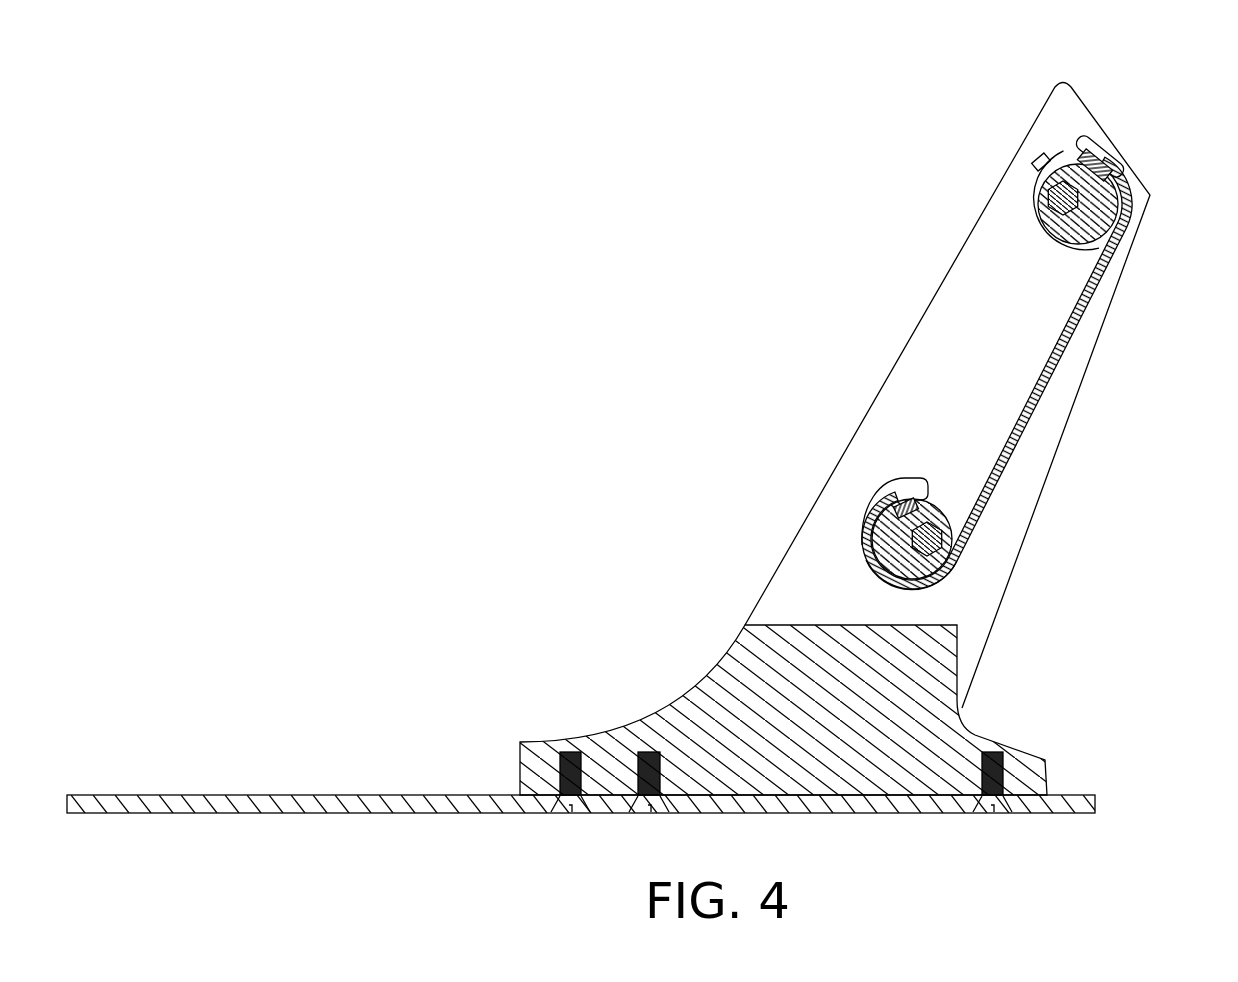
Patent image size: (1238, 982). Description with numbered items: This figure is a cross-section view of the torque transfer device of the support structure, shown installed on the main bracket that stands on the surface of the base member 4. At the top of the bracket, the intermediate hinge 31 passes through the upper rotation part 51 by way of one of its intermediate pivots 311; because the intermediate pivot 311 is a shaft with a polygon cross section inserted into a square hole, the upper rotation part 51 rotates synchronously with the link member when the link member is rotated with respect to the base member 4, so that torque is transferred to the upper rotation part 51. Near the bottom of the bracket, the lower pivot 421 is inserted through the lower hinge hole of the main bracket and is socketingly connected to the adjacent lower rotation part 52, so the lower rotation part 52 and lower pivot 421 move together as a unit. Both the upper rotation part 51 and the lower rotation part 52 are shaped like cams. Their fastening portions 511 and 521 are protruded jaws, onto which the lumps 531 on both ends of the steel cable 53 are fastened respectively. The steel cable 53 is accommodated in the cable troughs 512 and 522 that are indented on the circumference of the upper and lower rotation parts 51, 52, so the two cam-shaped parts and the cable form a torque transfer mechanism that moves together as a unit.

The base member 4 is at (863, 813).
The lower pivot 421 is at (953, 575).
The intermediate hinge 31 is at (940, 330).
The intermediate pivot 311 is at (1058, 190).
The upper rotation part 51 is at (1136, 165).
The fastening portion 511 is at (1088, 145).
The cable trough 512 is at (1075, 248).
The lower rotation part 52 is at (912, 499).
The fastening portion 521 is at (912, 482).
The cable trough 522 is at (960, 560).
The steel cable 53 is at (1042, 386).
The lump 531 is at (1083, 157).